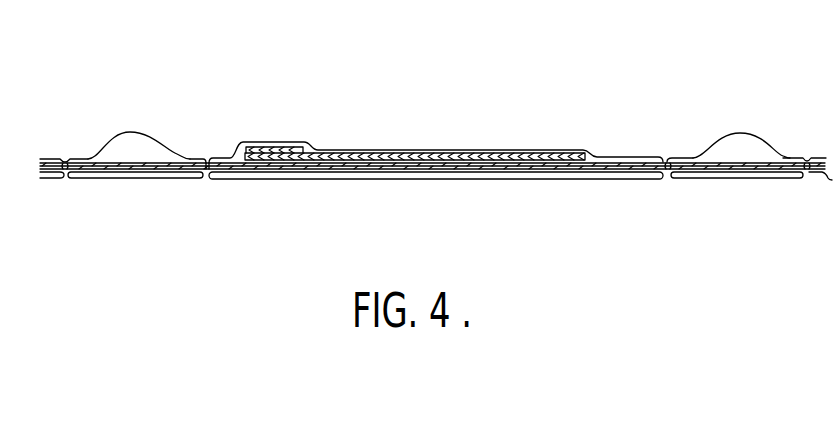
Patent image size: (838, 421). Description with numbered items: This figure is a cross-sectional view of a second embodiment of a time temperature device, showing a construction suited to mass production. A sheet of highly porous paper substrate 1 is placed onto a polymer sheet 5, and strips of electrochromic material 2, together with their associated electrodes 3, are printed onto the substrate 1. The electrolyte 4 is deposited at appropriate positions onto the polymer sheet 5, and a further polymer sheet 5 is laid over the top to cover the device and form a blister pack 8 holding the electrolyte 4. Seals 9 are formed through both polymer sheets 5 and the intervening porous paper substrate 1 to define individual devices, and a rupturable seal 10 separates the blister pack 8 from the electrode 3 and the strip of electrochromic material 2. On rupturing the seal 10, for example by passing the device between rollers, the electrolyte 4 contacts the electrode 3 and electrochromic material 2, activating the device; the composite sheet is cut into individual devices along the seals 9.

The porous paper substrate 1 is at (332, 170).
The electrochromic material 2 is at (462, 156).
The electrode 3 is at (280, 150).
The electrolyte 4 is at (156, 150).
The polymer sheet 5 is at (566, 150).
The blister pack 8 is at (128, 130).
The seal 9 is at (64, 157).
The rupturable seal 10 is at (209, 158).